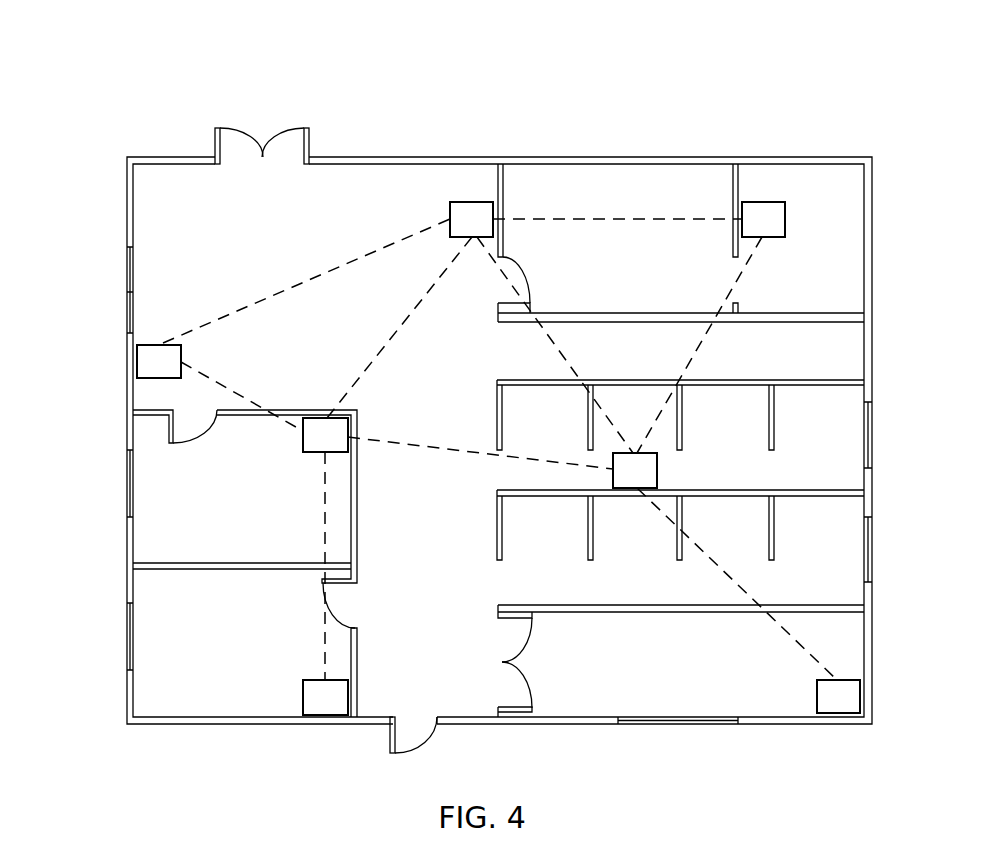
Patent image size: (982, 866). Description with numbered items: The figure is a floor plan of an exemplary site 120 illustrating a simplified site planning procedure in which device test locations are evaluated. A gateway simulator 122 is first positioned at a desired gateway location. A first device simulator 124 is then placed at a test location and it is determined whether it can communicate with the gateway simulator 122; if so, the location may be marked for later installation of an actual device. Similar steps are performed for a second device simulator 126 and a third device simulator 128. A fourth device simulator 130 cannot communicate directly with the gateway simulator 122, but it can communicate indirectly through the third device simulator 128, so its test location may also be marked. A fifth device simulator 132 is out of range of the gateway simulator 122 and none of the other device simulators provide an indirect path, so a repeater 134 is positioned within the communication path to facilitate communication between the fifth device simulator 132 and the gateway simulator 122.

The site 120 is at (614, 79).
The gateway simulator 122 is at (473, 202).
The first device simulator 124 is at (765, 202).
The second device simulator 126 is at (137, 357).
The third device simulator 128 is at (303, 443).
The fourth device simulator 130 is at (303, 701).
The fifth device simulator 132 is at (817, 697).
The repeater 134 is at (658, 468).